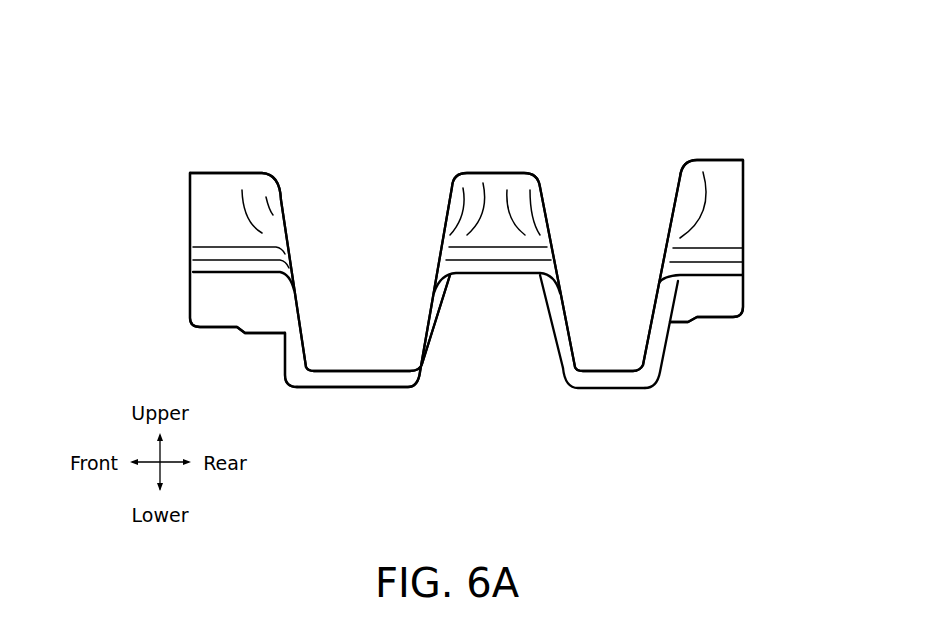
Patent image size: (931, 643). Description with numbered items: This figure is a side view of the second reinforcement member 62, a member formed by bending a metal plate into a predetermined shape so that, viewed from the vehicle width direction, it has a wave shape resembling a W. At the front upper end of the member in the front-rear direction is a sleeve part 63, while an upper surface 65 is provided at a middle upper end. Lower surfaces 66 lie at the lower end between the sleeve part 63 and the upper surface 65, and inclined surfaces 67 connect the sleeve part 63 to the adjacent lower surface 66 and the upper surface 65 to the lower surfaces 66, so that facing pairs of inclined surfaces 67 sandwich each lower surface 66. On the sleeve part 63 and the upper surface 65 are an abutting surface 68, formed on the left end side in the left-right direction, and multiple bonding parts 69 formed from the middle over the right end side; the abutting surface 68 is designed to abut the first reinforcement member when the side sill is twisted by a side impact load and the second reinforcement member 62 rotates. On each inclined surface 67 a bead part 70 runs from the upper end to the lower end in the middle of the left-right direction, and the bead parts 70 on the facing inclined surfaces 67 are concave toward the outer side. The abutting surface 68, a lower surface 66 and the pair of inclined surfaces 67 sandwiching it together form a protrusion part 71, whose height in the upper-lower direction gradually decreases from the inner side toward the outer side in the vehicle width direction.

The second reinforcement member 62 is at (372, 106).
The sleeve part 63 is at (188, 190).
The upper surface 65 is at (497, 197).
The lower surface 66 is at (363, 380).
The inclined surface 67 is at (433, 307).
The abutting surface 68 is at (220, 252).
The bonding part 69 is at (224, 172).
The bead part 70 is at (447, 207).
The protrusion part 71 is at (287, 364).